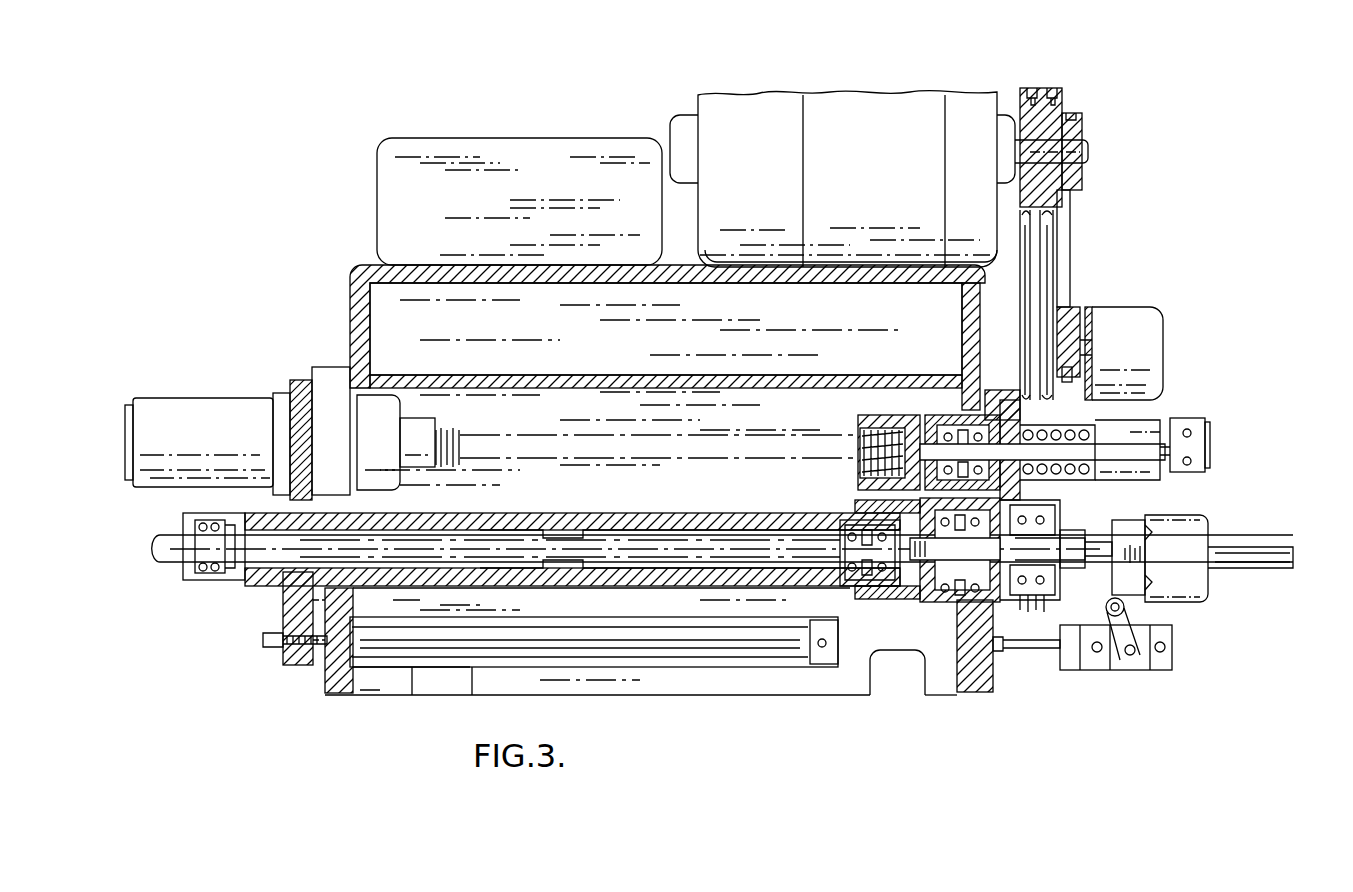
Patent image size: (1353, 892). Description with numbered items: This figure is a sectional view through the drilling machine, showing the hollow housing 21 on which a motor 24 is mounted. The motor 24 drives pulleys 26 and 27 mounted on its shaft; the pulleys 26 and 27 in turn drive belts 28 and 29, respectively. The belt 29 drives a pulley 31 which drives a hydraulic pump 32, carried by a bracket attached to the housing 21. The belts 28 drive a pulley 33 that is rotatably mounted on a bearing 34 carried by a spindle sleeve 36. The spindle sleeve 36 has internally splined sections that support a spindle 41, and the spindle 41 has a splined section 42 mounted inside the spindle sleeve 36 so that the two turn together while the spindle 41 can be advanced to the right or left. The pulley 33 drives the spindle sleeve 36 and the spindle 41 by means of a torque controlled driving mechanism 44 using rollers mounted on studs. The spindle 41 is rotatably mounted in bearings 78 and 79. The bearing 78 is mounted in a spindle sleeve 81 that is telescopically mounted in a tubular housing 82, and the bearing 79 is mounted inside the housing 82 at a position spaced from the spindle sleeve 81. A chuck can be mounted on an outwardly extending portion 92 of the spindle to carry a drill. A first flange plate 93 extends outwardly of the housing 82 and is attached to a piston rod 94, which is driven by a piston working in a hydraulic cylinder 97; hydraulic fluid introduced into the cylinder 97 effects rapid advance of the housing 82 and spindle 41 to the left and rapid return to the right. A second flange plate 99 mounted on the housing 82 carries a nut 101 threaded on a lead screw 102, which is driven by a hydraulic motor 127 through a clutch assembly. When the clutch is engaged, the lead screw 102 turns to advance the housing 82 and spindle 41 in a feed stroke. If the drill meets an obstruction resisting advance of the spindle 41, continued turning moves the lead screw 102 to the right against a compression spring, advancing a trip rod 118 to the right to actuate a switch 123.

The housing 21 is at (938, 678).
The motor 24 is at (860, 115).
The pulley 26 is at (1065, 98).
The pulley 27 is at (1090, 130).
The belts 28 is at (1052, 95).
The belt 29 is at (1080, 118).
The pulley 31 is at (1075, 320).
The hydraulic pump 32 is at (1145, 318).
The pulley 33 is at (1060, 520).
The bearing 34 is at (1100, 520).
The spindle sleeve 36 is at (1005, 655).
The spindle 41 is at (1255, 568).
The splined section 42 is at (840, 580).
The torque controlled driving mechanism 44 is at (1192, 603).
The bearing 78 is at (210, 575).
The bearing 79 is at (770, 520).
The spindle sleeve 81 is at (262, 575).
The tubular housing 82 is at (650, 515).
The outwardly extending portion 92 is at (160, 562).
The first flange plate 93 is at (295, 668).
The piston rod 94 is at (265, 642).
The hydraulic cylinder 97 is at (695, 652).
The second flange plate 99 is at (858, 503).
The nut 101 is at (858, 430).
The lead screw 102 is at (460, 432).
The trip rod 118 is at (1118, 452).
The switch 123 is at (1210, 425).
The hydraulic motor 127 is at (187, 412).